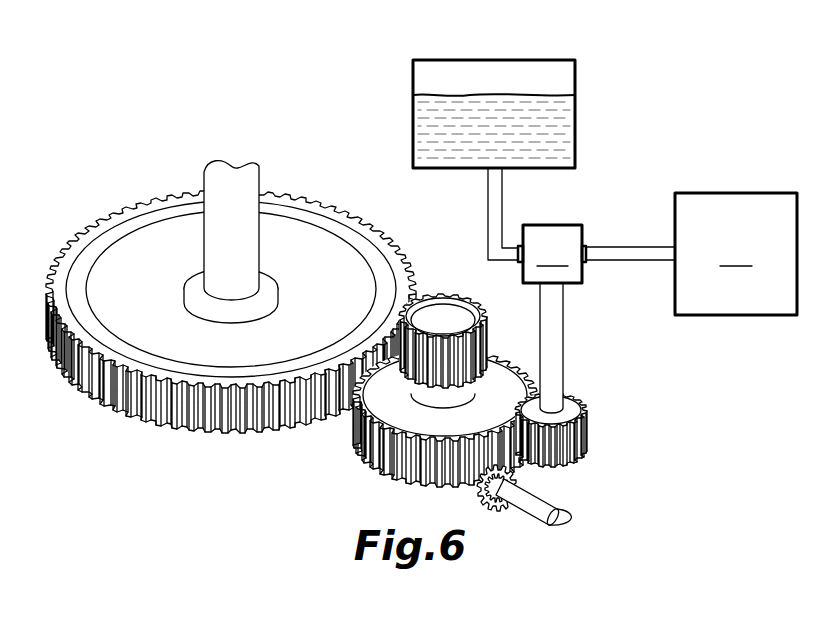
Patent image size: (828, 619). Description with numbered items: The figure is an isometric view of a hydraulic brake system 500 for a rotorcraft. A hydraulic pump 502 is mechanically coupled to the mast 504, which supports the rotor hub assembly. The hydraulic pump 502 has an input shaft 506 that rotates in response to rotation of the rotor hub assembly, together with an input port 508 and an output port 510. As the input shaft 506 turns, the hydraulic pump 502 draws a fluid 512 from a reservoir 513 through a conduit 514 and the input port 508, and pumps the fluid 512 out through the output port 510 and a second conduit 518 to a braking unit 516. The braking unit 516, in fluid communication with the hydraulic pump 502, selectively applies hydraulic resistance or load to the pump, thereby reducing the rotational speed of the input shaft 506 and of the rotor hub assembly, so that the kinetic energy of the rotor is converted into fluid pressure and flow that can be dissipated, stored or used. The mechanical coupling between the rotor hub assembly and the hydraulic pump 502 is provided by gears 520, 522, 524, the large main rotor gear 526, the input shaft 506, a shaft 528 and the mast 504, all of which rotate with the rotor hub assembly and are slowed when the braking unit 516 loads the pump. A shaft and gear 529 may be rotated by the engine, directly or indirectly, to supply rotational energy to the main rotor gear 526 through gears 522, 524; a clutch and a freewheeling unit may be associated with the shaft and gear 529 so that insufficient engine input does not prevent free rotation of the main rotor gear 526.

The hydraulic brake system 500 is at (359, 163).
The hydraulic pump 502 is at (552, 254).
The mast 504 is at (203, 176).
The input shaft 506 is at (558, 359).
The input port 508 is at (520, 265).
The output port 510 is at (584, 247).
The fluid 512 is at (538, 102).
The reservoir 513 is at (457, 67).
The conduit 514 is at (488, 205).
The braking unit 516 is at (736, 254).
The conduit 518 is at (633, 262).
The gear 520 is at (585, 432).
The gear 522 is at (378, 468).
The gear 524 is at (438, 308).
The main rotor gear 526 is at (103, 400).
The shaft 528 is at (422, 398).
The shaft and gear 529 is at (500, 510).